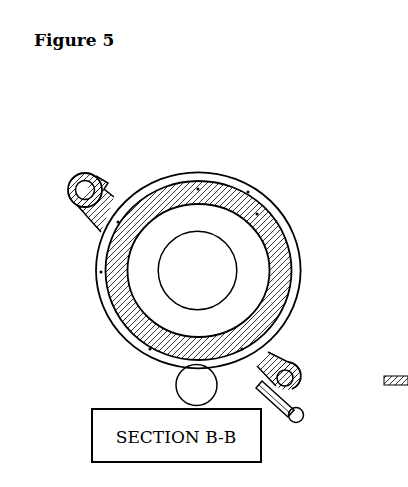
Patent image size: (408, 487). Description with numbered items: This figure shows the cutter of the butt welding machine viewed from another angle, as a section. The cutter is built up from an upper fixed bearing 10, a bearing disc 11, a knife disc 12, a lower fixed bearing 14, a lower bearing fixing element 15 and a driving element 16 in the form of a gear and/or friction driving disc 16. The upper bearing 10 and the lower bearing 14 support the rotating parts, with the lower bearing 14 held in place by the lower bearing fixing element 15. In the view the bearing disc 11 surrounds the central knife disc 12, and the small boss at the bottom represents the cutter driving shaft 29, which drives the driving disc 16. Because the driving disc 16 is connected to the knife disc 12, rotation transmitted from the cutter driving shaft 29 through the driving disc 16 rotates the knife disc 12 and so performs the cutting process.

The upper bearing 10 is at (111, 189).
The bearing disc 11 is at (281, 220).
The knife disc 12 is at (199, 232).
The lower bearing 14 is at (294, 362).
The lower bearing fixing element 15 is at (304, 418).
The driving element (driving disc) 16 is at (264, 199).
The cutter driving shaft 29 is at (176, 386).